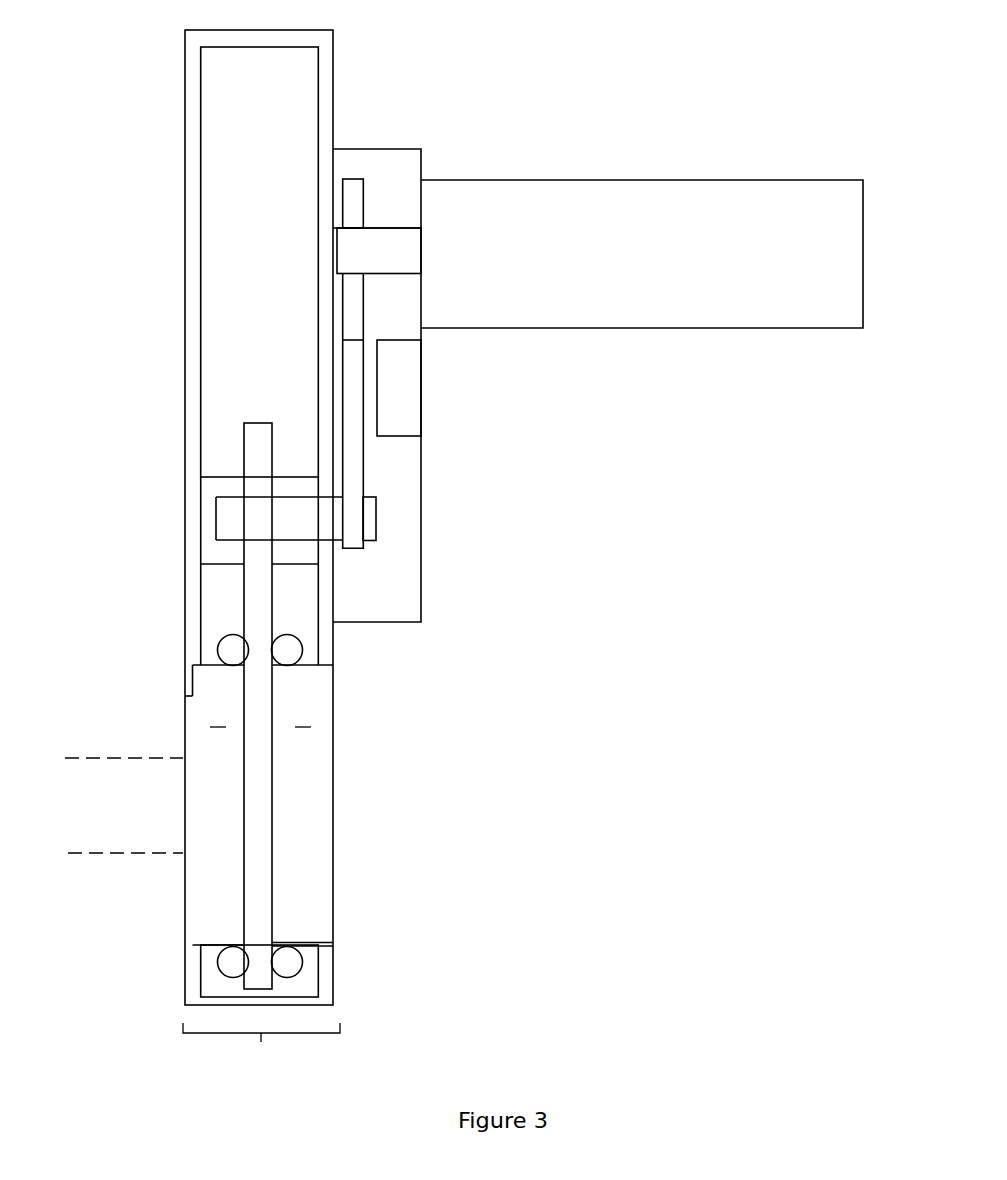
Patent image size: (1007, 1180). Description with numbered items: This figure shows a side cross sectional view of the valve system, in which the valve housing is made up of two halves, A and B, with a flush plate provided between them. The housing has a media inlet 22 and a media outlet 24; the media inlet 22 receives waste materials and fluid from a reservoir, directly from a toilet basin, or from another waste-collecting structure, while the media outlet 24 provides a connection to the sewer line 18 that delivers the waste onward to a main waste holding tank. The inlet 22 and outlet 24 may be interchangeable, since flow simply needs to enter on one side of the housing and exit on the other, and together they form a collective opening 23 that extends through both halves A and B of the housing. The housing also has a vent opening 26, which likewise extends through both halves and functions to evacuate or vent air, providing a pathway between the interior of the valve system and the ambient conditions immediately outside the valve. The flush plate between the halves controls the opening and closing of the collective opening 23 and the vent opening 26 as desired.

The sewer line 18 is at (132, 853).
The media inlet 22 is at (310, 790).
The collective opening 23 is at (261, 1048).
The media outlet 24 is at (215, 815).
The vent opening 26 is at (215, 604).